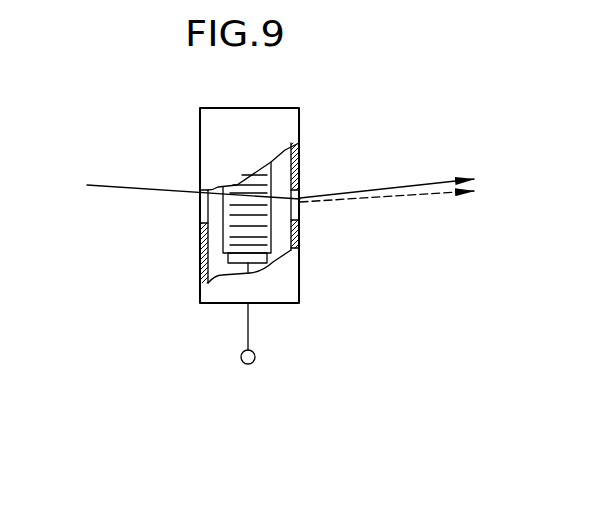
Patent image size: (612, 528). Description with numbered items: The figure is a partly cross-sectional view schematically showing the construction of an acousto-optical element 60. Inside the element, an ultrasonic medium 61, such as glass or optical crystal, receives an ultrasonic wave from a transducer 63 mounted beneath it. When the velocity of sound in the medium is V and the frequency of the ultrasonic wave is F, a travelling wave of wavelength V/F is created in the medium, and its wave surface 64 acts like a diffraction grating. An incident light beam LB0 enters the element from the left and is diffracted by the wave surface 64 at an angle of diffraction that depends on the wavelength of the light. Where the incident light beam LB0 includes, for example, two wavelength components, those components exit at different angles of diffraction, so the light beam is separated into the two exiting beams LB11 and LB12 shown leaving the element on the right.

The acousto-optical element 60 is at (283, 107).
The ultrasonic medium 61 is at (230, 229).
The transducer 63 is at (262, 262).
The wave surface 64 is at (257, 227).
The incident light beam LB0 is at (112, 185).
The separated light beam LB11 is at (410, 183).
The separated light beam LB12 is at (383, 198).